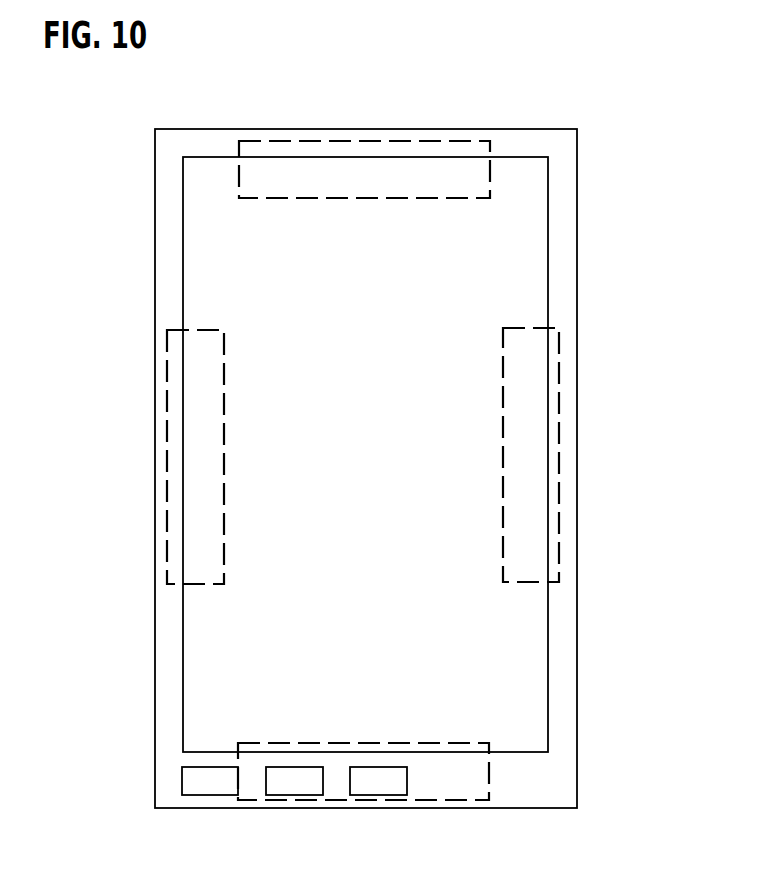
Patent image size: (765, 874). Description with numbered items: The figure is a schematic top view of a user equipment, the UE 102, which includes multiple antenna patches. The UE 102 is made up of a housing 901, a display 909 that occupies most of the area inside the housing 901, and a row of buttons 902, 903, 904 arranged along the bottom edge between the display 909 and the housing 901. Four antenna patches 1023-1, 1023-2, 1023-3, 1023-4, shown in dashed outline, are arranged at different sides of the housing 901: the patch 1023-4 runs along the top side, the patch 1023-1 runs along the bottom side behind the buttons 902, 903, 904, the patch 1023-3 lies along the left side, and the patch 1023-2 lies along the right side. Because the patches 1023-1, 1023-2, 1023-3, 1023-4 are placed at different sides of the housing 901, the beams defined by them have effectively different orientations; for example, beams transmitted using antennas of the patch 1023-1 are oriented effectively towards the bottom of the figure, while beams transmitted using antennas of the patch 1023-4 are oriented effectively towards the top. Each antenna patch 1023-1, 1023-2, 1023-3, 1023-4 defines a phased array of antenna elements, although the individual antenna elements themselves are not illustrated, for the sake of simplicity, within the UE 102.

The UE 102 is at (572, 86).
The housing 901 is at (556, 809).
The display 909 is at (548, 673).
The button 902 is at (212, 796).
The button 903 is at (278, 796).
The button 904 is at (367, 796).
The antenna patch 1023-1 is at (470, 801).
The antenna patch 1023-2 is at (560, 560).
The antenna patch 1023-3 is at (170, 564).
The antenna patch 1023-4 is at (368, 143).